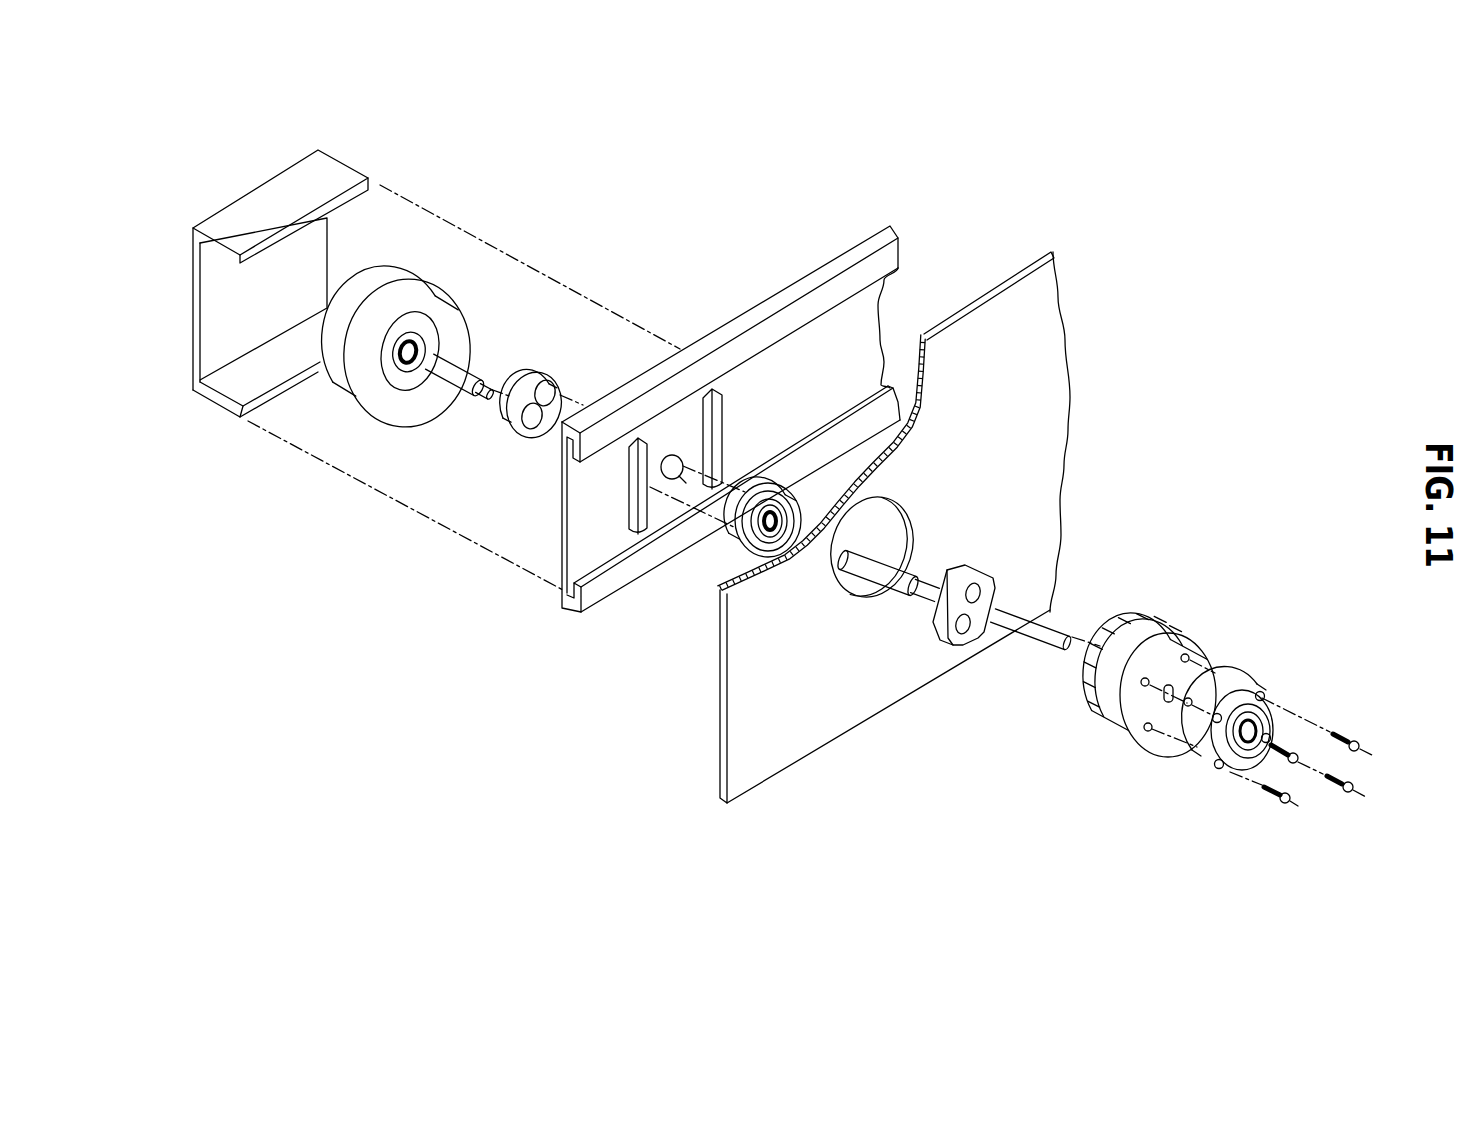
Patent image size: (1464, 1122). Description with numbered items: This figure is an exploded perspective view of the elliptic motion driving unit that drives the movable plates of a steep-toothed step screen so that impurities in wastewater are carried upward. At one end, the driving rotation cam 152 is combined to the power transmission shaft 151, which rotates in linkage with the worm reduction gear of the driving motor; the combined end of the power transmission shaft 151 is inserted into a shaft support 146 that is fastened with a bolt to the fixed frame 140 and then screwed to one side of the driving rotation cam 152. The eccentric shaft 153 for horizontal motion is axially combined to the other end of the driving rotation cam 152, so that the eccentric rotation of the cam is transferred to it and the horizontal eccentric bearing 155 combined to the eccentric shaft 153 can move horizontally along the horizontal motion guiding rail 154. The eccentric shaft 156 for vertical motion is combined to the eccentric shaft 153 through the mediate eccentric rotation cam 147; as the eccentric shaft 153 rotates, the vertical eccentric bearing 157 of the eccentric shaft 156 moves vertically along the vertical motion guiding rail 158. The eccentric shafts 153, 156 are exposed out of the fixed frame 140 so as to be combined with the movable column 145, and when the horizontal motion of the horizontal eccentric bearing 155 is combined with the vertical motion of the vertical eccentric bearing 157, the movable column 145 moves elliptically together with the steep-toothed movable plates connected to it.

The fixed frame 140 is at (747, 668).
The movable column 145 is at (602, 588).
The shaft support 146 is at (1200, 756).
The mediate eccentric rotation cam 147 is at (511, 437).
The power transmission shaft 151 is at (1050, 627).
The driving rotation cam 152 is at (967, 623).
The eccentric shaft for horizontal motion 153 is at (900, 582).
The horizontal motion guiding rail 154 is at (638, 533).
The horizontal eccentric bearing 155 is at (742, 545).
The eccentric shaft for vertical motion 156 is at (452, 392).
The vertical eccentric bearing 157 is at (331, 392).
The vertical motion guiding rail 158 is at (233, 390).